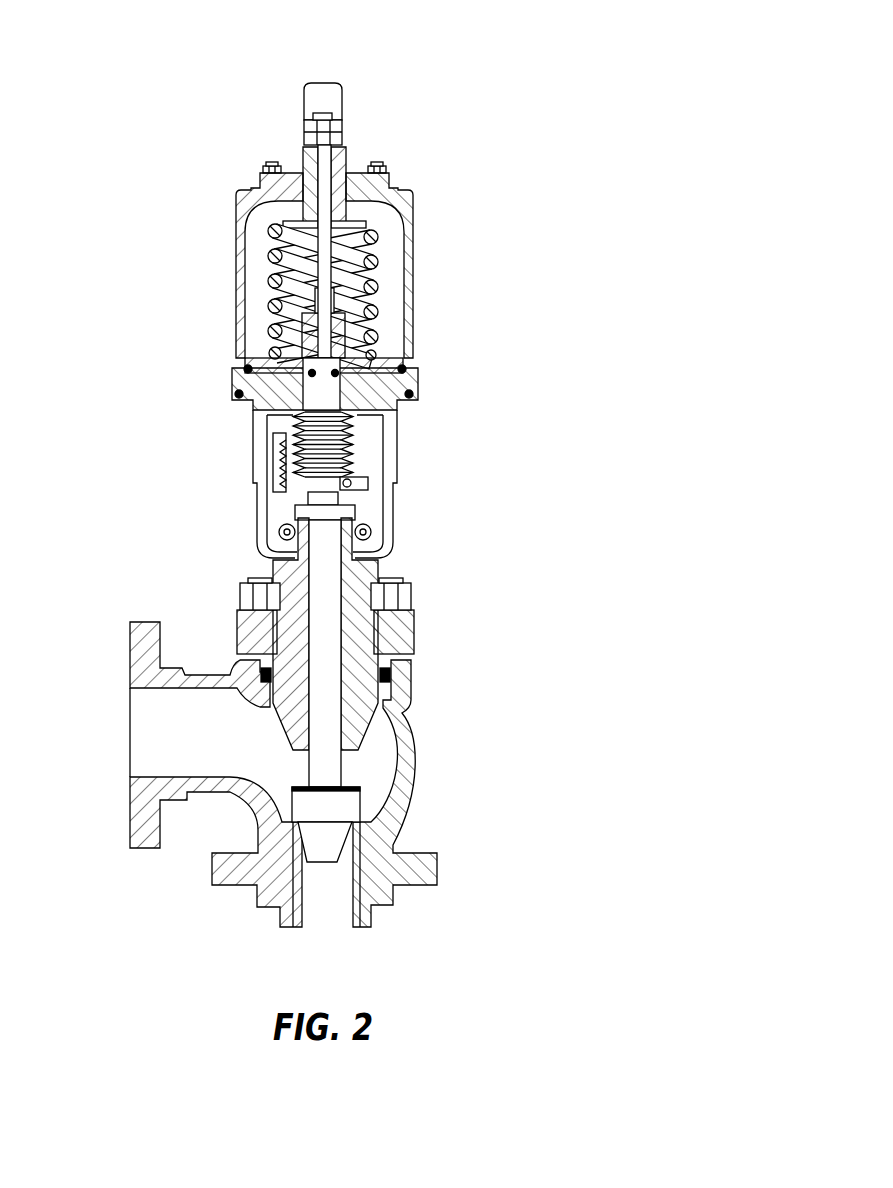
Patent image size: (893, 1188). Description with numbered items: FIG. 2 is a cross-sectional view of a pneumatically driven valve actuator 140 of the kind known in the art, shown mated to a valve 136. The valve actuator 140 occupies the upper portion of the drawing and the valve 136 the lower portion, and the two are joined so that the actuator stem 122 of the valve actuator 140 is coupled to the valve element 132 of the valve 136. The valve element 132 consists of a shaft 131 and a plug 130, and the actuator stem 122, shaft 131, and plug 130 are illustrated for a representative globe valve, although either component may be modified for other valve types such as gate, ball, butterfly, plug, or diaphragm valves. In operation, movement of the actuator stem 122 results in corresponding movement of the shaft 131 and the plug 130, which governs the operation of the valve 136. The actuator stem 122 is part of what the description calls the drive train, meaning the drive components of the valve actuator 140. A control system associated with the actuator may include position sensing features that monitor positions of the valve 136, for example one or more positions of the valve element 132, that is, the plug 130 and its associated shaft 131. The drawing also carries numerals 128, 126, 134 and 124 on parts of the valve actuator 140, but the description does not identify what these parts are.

The valve actuator 140 is at (384, 85).
The actuator cap and stem adjustment 128 is at (352, 185).
The actuator housing 126 is at (236, 248).
The spring 134 is at (270, 290).
The spring seat 124 is at (330, 331).
The actuator stem 122 is at (395, 340).
The valve element 132 is at (364, 718).
The valve 136 is at (422, 744).
The shaft 131 is at (330, 767).
The plug 130 is at (338, 811).